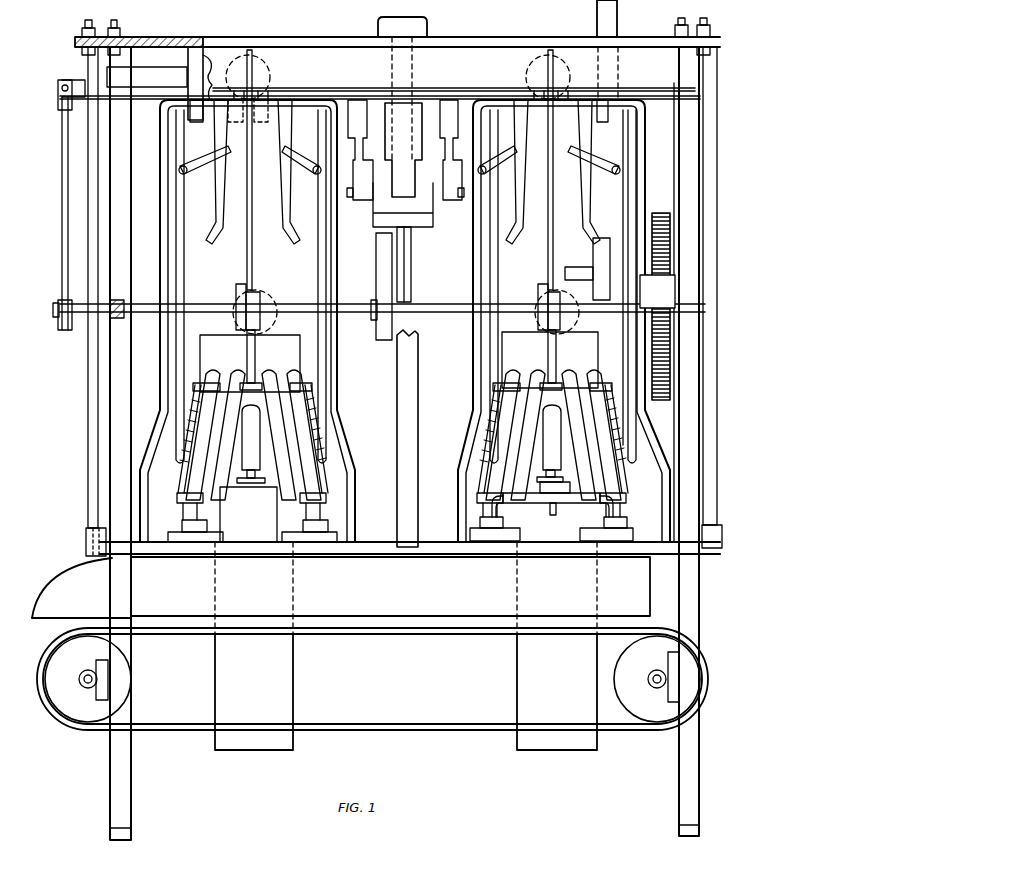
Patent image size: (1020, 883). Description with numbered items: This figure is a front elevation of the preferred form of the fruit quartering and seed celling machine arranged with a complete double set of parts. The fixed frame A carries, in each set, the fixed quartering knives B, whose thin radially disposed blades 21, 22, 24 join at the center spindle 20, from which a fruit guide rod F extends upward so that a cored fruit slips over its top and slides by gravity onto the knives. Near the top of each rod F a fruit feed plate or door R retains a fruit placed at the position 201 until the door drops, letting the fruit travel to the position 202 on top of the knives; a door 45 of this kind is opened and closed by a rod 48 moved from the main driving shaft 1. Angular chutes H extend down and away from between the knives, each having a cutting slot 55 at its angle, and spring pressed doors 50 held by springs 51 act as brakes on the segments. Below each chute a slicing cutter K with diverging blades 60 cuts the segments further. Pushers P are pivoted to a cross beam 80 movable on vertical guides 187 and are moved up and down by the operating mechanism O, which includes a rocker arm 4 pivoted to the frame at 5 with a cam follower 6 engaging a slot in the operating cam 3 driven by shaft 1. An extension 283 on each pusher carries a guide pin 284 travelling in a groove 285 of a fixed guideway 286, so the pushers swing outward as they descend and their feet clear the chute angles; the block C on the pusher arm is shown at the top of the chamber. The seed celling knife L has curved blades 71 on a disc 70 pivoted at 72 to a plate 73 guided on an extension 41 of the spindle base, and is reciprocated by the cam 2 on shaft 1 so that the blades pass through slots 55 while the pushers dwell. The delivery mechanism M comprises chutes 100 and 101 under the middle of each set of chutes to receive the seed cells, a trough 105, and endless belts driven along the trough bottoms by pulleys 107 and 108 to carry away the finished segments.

The fixed frame A is at (340, 37).
The vertical guides 187 is at (116, 30).
The rod 48 is at (62, 205).
The main driving shaft 1 is at (58, 306).
The cross beam 80 is at (159, 83).
The fixed quartering knives B is at (405, 321).
The fruit guide rod F is at (250, 50).
The fruit position 201 is at (263, 72).
The door 45 is at (534, 90).
The fruit feed plate or door R is at (272, 92).
The block C is at (195, 115).
The pushers P is at (224, 213).
The guide pin 284 is at (180, 172).
The extension 283 is at (295, 168).
The groove 285 is at (620, 200).
The fixed guideway 286 is at (634, 214).
The rocker arm 4 is at (406, 243).
The operating mechanism O is at (407, 260).
The operating cam 3 is at (376, 255).
The cam follower 6 is at (376, 284).
The pivot 5 is at (583, 268).
The cam 2 is at (236, 291).
The fruit position 202 is at (268, 320).
The center spindle 20 is at (258, 364).
The blade 21 is at (557, 350).
The blade 24 is at (528, 359).
The blade 22 is at (584, 357).
The angular chutes H is at (288, 440).
The doors 50 is at (300, 452).
The springs 51 is at (324, 486).
The cutting slot 55 is at (185, 516).
The slicing cutter K is at (300, 526).
The extension 41 is at (542, 448).
The plate 73 is at (561, 480).
The pivot 72 is at (540, 488).
The disc 70 is at (572, 500).
The seed celling knife L is at (552, 516).
The seed celling blade 71 is at (557, 508).
The trough 105 is at (341, 587).
The diverging blades 60 is at (198, 548).
The delivery mechanism M is at (532, 655).
The chute 100 is at (254, 692).
The chute 101 is at (557, 692).
The pulley 107 is at (88, 679).
The pulley 108 is at (657, 679).